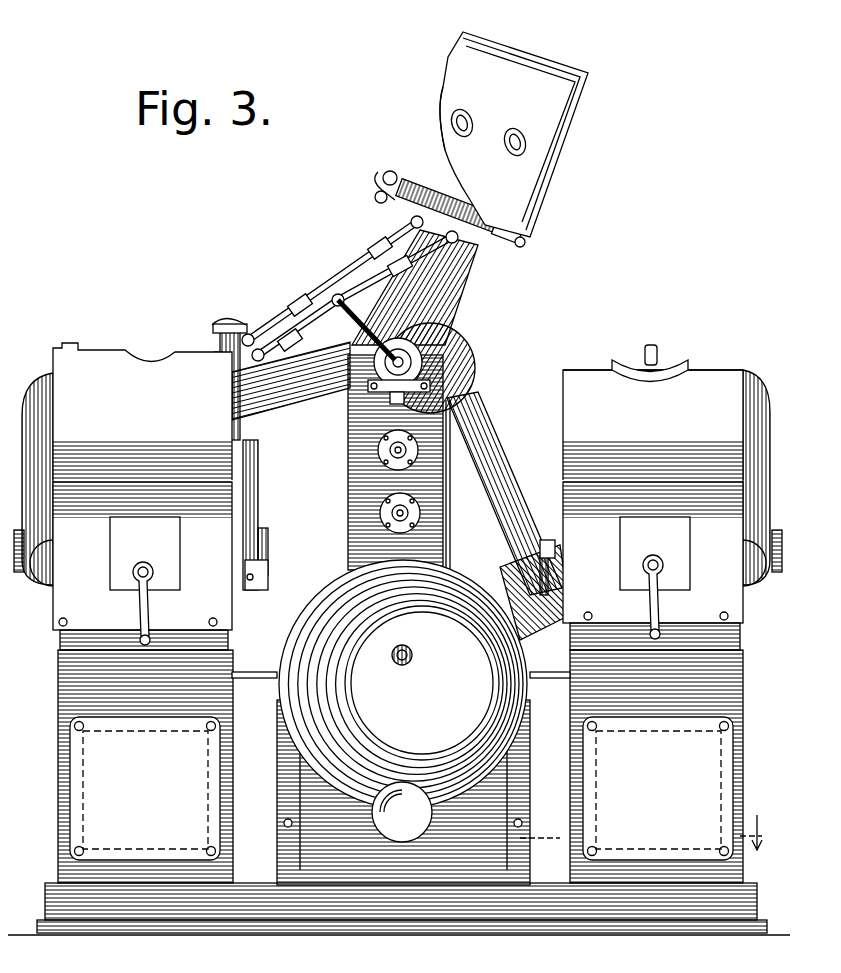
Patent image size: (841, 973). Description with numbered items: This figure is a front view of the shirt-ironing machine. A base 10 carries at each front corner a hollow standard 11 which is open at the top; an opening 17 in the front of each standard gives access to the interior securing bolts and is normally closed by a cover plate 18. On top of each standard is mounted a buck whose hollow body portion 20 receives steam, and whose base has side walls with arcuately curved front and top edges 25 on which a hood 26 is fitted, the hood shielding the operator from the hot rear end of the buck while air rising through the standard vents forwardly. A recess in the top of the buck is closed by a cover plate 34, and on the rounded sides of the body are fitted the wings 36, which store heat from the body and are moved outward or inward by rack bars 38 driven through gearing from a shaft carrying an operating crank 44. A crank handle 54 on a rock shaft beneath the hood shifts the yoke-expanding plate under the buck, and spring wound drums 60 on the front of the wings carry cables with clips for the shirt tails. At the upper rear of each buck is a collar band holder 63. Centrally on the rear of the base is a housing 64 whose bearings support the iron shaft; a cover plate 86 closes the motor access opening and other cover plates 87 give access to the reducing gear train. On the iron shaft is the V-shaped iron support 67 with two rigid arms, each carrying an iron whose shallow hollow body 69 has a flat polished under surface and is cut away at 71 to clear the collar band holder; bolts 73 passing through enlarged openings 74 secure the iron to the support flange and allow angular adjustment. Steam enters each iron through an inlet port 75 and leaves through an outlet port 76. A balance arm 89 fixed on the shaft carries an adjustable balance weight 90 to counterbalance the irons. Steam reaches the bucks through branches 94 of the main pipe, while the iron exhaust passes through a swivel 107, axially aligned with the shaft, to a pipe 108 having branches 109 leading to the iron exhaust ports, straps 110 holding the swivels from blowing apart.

The base 10 is at (224, 922).
The standard 11 is at (58, 700).
The opening 17 is at (80, 850).
The cover plate 18 is at (70, 802).
The body portion 20 is at (258, 502).
The arcuately curved front and top edges 25 is at (655, 553).
The hood 26 is at (56, 610).
The cover plate 34 is at (62, 502).
The wings 36 is at (32, 450).
The rack bars 38 is at (659, 832).
The operating crank 44 is at (149, 617).
The crank handle 54 is at (268, 585).
The spring wound drums 60 is at (18, 570).
The collar band holder 63 is at (633, 362).
The housing 64 is at (445, 380).
The iron support 67 is at (452, 284).
The iron body 69 is at (562, 60).
The cut away portion 71 is at (447, 128).
The bolts 73 is at (415, 196).
The enlarged openings 74 is at (472, 121).
The inlet port 75 is at (385, 176).
The outlet port 76 is at (526, 242).
The cover plate 86 is at (403, 701).
The cover plates 87 is at (455, 332).
The balance arm 89 is at (500, 487).
The balance weight 90 is at (500, 582).
The branches 94 is at (250, 672).
The swivel 107 is at (468, 352).
The pipe 108 is at (453, 502).
The branches 109 is at (410, 226).
The straps 110 is at (360, 402).